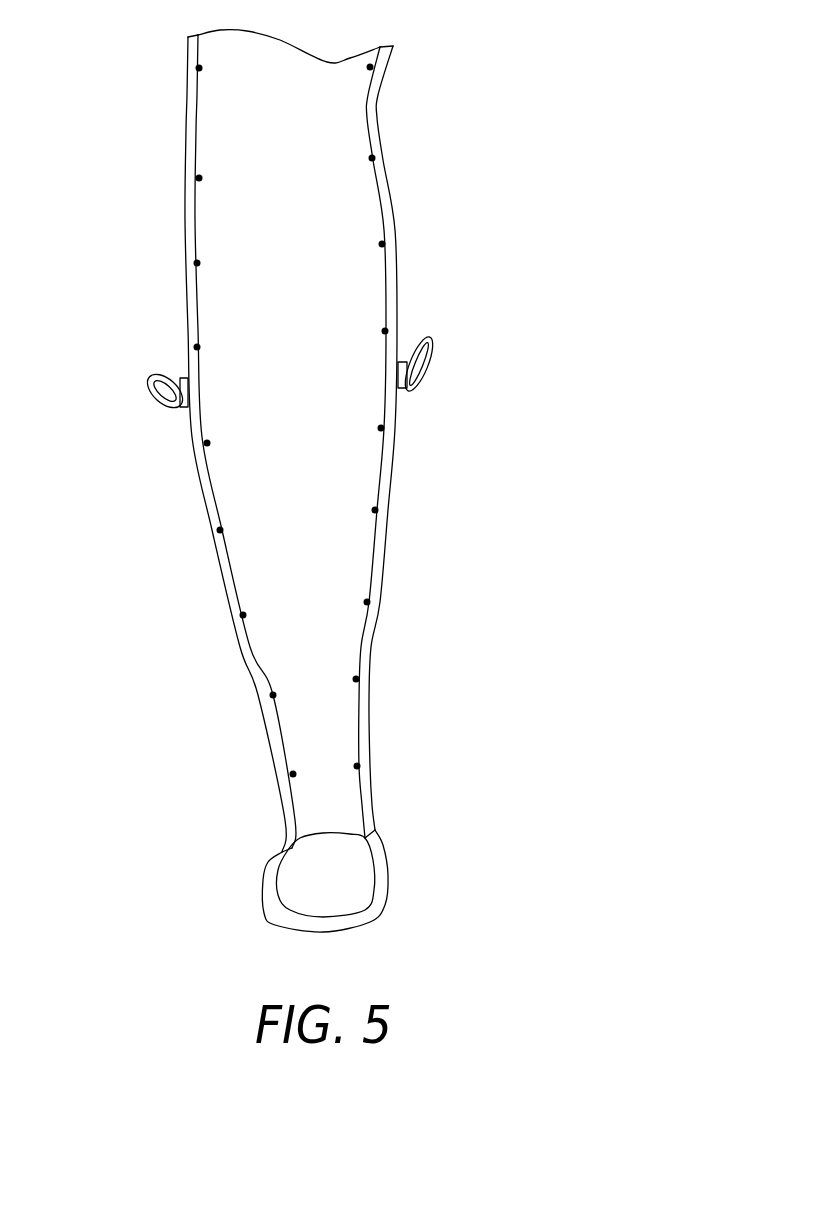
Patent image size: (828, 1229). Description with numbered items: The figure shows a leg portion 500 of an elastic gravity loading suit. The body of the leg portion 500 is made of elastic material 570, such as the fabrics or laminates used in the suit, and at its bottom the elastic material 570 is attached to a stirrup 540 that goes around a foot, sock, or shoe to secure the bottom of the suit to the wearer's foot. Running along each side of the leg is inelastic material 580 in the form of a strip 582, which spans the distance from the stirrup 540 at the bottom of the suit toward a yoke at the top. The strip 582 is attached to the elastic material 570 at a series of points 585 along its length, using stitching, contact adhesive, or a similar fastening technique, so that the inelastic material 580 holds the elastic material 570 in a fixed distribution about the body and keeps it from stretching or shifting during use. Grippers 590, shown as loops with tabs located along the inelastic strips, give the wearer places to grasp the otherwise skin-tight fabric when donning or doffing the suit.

The leg portion 500 is at (123, 80).
The stirrup 540 is at (387, 865).
The elastic material 570 is at (342, 725).
The inelastic material 580 is at (212, 562).
The strip 582 is at (383, 583).
The points 585 is at (372, 158).
The grippers 590 is at (165, 368).